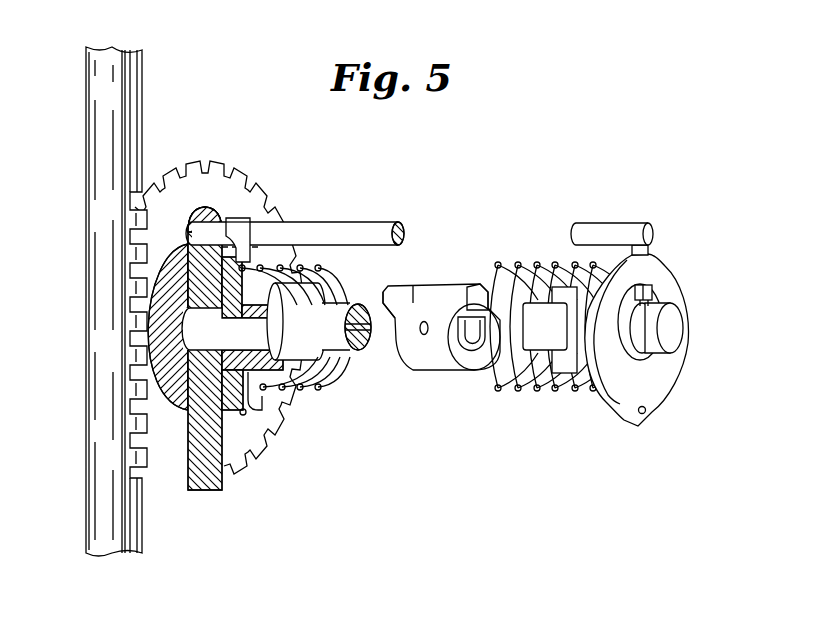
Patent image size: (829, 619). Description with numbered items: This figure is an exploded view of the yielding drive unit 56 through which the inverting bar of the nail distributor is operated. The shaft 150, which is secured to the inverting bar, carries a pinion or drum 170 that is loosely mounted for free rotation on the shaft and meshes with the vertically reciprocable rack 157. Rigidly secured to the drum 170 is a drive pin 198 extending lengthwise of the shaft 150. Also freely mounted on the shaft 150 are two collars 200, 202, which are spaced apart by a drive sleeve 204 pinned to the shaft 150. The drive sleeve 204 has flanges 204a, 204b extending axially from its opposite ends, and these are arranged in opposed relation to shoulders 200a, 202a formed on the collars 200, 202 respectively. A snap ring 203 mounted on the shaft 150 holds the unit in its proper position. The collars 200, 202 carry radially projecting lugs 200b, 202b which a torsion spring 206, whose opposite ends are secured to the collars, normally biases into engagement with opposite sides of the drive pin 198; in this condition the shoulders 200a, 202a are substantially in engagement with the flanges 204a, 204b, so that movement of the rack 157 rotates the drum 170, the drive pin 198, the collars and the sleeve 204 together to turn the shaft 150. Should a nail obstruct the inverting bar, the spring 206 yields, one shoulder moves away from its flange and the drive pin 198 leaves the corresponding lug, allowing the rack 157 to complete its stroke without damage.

The yielding drive unit 56 is at (284, 146).
The rack 157 is at (86, 233).
The pinion or drum 170 is at (230, 470).
The shaft 150 is at (190, 325).
The drive pin 198 is at (341, 222).
The collar 200 is at (307, 357).
The shoulder 200a is at (303, 300).
The lug 200b is at (243, 226).
The drive sleeve 204 is at (442, 368).
The flange 204a is at (397, 290).
The flange 204b is at (477, 290).
The torsion spring 206 is at (545, 262).
The collar 202 is at (585, 362).
The shoulder 202a is at (550, 330).
The lug 202b is at (623, 222).
The snap ring 203 is at (655, 294).